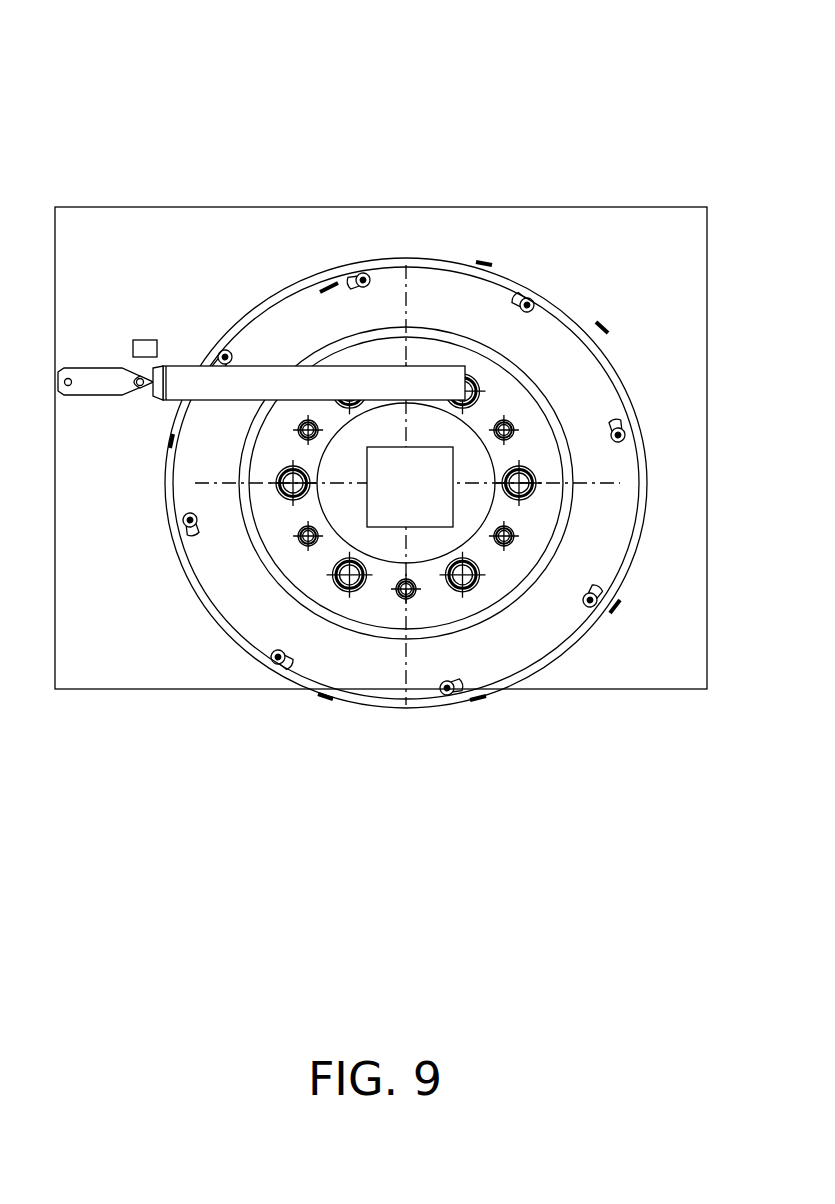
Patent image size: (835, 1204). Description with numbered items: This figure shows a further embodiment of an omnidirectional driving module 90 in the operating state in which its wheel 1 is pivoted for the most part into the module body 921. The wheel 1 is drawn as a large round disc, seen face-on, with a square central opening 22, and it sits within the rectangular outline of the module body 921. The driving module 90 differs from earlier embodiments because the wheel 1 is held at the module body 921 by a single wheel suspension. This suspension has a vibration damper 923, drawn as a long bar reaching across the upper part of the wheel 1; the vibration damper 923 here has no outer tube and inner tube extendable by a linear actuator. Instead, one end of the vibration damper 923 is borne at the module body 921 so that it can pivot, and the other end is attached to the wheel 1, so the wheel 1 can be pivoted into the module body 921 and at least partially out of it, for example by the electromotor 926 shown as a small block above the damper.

The omnidirectional driving module 90 is at (322, 150).
The module body 921 is at (672, 675).
The vibration damper 923 is at (445, 383).
The electromotor 926 is at (148, 340).
The wheel 1 is at (366, 680).
The central hub opening 22 is at (425, 510).